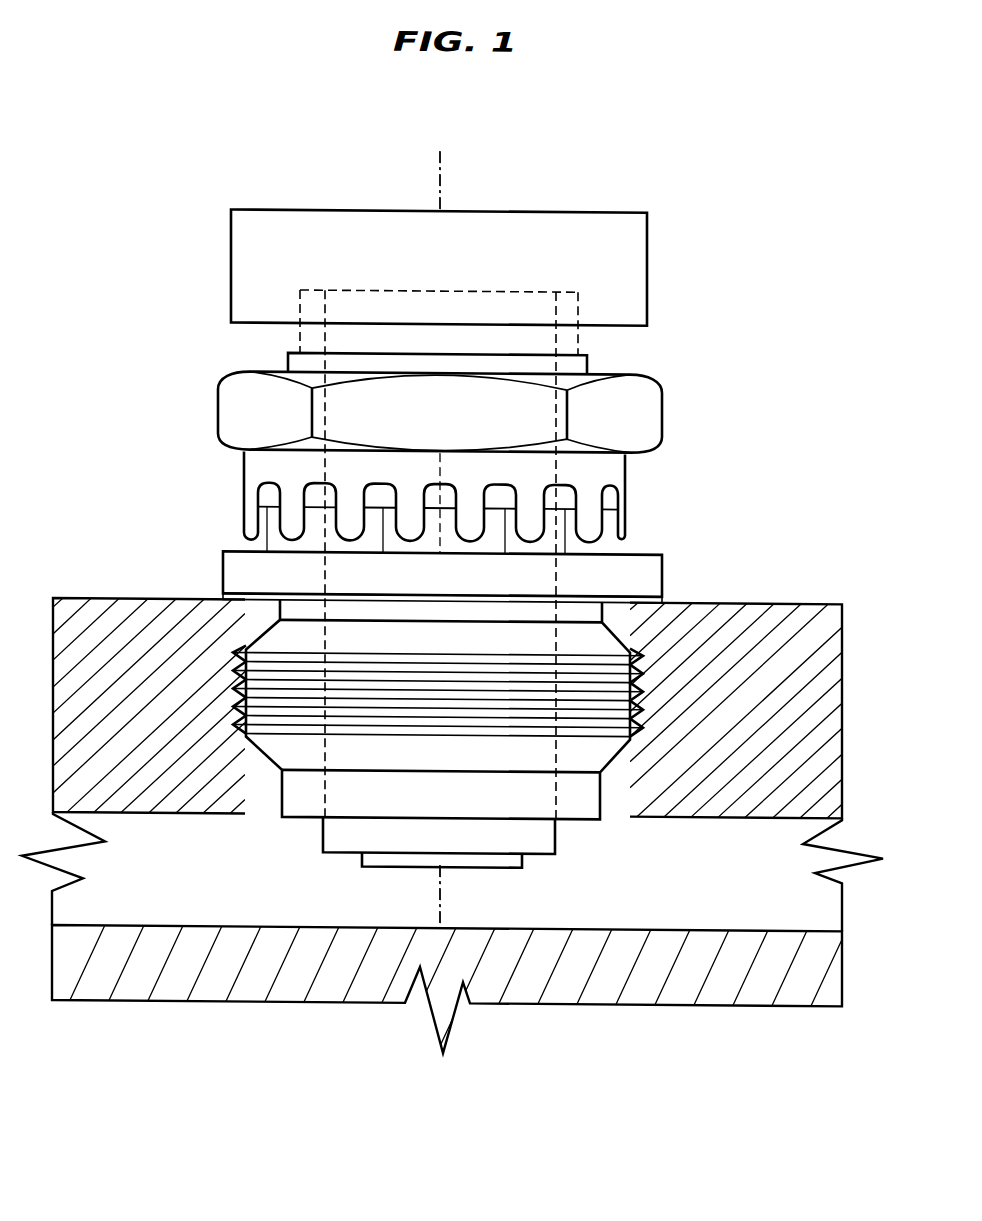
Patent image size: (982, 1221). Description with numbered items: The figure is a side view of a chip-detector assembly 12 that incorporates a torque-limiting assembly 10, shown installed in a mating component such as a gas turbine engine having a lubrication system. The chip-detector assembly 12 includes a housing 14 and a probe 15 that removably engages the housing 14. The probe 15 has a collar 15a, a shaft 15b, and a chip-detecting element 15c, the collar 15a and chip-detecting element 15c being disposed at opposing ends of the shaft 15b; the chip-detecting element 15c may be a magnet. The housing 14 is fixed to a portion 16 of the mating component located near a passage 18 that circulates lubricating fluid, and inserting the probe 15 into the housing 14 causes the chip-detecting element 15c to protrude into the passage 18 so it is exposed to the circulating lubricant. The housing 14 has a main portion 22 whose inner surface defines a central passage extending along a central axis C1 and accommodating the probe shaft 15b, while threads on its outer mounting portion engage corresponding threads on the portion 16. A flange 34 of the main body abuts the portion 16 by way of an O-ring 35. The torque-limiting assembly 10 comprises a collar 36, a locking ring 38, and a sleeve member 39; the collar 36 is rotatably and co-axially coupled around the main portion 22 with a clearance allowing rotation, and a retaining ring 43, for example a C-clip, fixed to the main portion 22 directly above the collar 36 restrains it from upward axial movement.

The torque-limiting assembly 10 is at (430, 483).
The chip-detector assembly 12 is at (497, 510).
The housing 14 is at (464, 563).
The probe 15 is at (443, 517).
The collar 15a is at (319, 256).
The shaft 15b is at (554, 838).
The chip-detecting element 15c is at (510, 866).
The portion 16 is at (783, 598).
The passage 18 is at (768, 869).
The main portion 22 is at (464, 805).
The flange 34 is at (223, 575).
The O-ring 35 is at (663, 598).
The collar 36 is at (459, 426).
The locking ring 38 is at (641, 467).
The sleeve member 39 is at (641, 546).
The retaining ring 43 is at (588, 365).
The central axis C1 is at (441, 162).